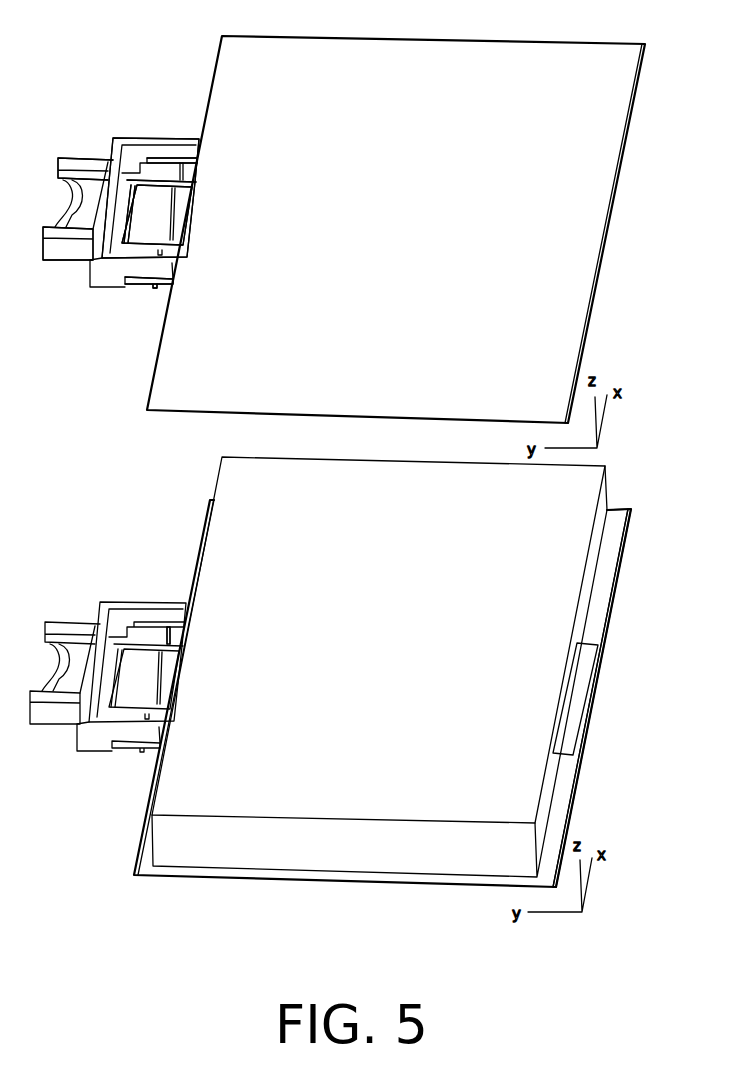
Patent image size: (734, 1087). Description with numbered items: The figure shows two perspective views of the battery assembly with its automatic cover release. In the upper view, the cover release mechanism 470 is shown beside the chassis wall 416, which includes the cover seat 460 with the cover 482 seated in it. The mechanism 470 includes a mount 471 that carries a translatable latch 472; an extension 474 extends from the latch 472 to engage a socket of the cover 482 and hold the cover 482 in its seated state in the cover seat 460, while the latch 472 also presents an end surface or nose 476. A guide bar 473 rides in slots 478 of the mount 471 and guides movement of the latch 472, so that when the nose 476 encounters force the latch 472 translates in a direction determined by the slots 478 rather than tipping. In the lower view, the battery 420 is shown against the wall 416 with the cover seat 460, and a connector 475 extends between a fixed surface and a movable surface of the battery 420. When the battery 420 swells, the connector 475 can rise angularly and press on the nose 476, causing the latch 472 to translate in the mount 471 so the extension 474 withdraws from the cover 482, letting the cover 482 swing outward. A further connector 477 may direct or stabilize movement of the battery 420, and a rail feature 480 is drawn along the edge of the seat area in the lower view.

The cover release mechanism 470 is at (115, 46).
The slots 478 is at (137, 277).
The translatable latch 472 is at (191, 183).
The nose 476 is at (192, 217).
The extension 474 is at (140, 217).
The mount 471 is at (100, 271).
The guide bar 473 is at (152, 288).
The cover seat 460 is at (150, 382).
The cover 482 is at (406, 232).
The wall 416 is at (665, 260).
The connector 475 is at (183, 640).
The guide rail 480 is at (617, 533).
The connector 477 is at (582, 688).
The battery 420 is at (390, 663).